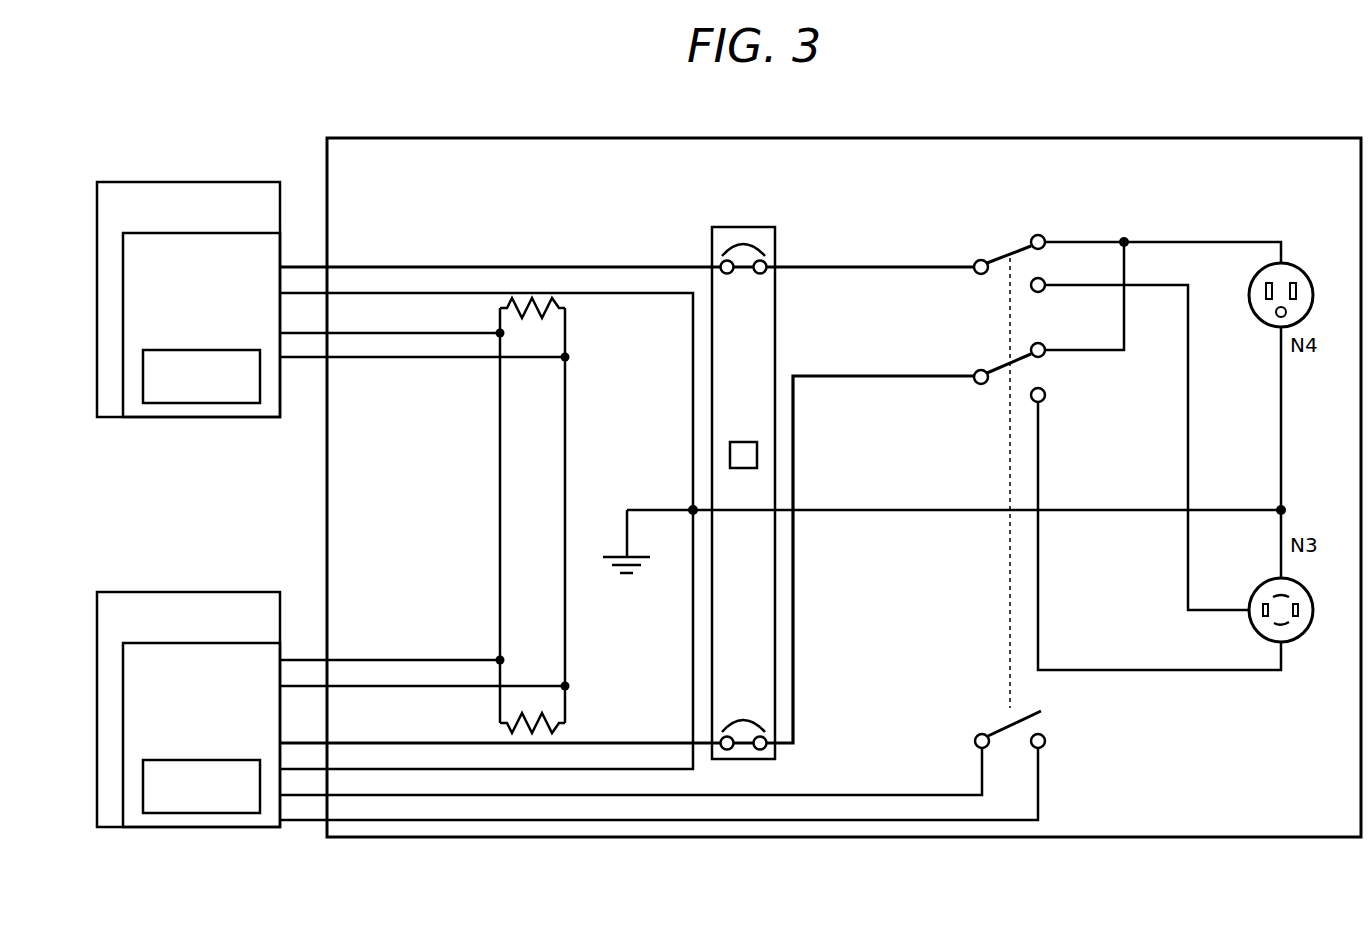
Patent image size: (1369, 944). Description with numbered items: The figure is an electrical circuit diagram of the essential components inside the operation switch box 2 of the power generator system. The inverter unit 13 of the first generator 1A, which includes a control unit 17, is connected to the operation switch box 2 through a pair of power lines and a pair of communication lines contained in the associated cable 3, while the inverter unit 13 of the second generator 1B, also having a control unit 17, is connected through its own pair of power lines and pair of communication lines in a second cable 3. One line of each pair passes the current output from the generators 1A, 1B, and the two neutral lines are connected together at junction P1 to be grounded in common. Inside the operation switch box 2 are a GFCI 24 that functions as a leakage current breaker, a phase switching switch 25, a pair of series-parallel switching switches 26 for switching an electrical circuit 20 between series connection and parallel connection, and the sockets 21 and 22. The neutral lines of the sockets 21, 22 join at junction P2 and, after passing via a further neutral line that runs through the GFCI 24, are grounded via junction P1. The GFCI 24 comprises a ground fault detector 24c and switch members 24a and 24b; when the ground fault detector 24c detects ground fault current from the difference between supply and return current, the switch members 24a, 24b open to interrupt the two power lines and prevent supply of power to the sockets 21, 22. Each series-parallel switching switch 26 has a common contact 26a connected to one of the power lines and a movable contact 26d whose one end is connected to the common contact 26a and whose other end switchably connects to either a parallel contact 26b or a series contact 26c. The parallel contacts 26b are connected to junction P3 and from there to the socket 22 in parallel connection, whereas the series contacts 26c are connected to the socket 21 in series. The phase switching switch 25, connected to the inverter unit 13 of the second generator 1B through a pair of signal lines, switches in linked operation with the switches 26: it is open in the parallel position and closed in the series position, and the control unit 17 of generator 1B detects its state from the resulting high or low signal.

The first generator 1A is at (150, 182).
The second generator 1B is at (150, 592).
The operation switch box 2 is at (1325, 138).
The cable 3 is at (306, 226).
The inverter unit 13 is at (123, 397).
The control unit 17 is at (223, 403).
The electrical circuit 20 is at (1236, 150).
The socket 21 is at (1312, 622).
The socket 22 is at (1304, 270).
The GFCI 24 is at (760, 227).
The switch member 24a is at (743, 240).
The switch member 24b is at (743, 718).
The ground fault detector 24c is at (728, 455).
The phase switching switch 25 is at (993, 726).
The series-parallel switching switch 26 is at (1106, 428).
The common contact 26a is at (981, 259).
The parallel contact 26b is at (1038, 235).
The series contact 26c is at (1040, 291).
The movable contact 26d is at (987, 258).
The junction P1 is at (693, 506).
The junction P2 is at (1278, 506).
The junction P3 is at (1128, 240).